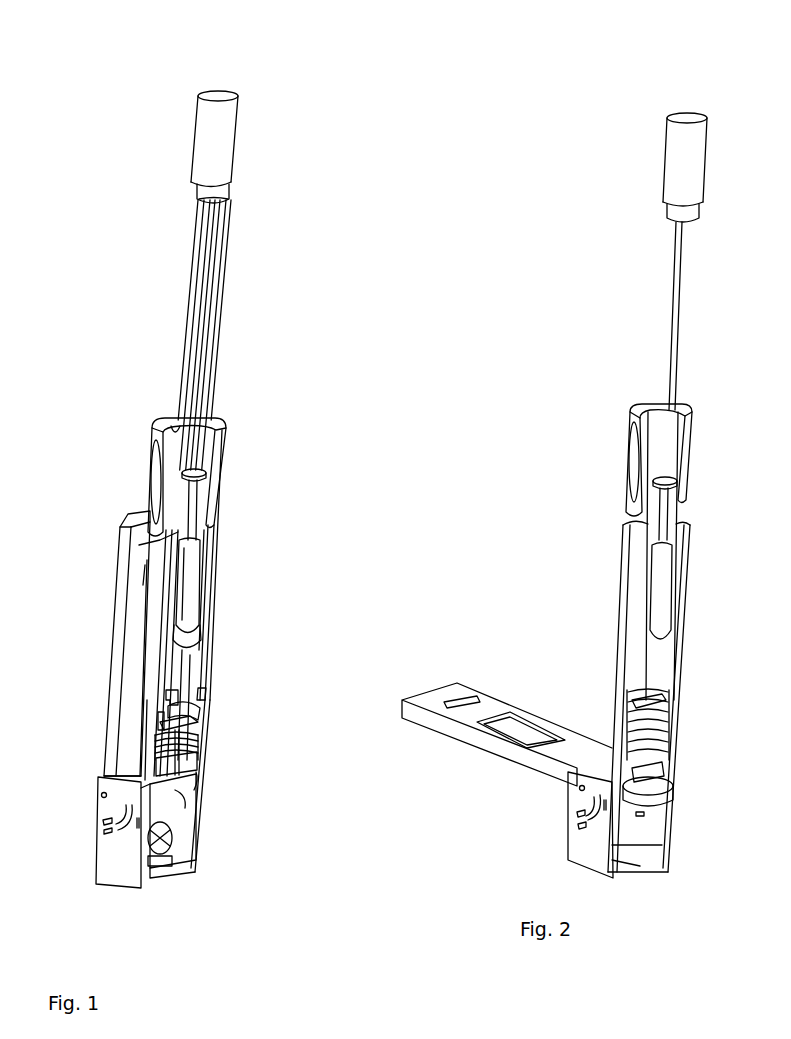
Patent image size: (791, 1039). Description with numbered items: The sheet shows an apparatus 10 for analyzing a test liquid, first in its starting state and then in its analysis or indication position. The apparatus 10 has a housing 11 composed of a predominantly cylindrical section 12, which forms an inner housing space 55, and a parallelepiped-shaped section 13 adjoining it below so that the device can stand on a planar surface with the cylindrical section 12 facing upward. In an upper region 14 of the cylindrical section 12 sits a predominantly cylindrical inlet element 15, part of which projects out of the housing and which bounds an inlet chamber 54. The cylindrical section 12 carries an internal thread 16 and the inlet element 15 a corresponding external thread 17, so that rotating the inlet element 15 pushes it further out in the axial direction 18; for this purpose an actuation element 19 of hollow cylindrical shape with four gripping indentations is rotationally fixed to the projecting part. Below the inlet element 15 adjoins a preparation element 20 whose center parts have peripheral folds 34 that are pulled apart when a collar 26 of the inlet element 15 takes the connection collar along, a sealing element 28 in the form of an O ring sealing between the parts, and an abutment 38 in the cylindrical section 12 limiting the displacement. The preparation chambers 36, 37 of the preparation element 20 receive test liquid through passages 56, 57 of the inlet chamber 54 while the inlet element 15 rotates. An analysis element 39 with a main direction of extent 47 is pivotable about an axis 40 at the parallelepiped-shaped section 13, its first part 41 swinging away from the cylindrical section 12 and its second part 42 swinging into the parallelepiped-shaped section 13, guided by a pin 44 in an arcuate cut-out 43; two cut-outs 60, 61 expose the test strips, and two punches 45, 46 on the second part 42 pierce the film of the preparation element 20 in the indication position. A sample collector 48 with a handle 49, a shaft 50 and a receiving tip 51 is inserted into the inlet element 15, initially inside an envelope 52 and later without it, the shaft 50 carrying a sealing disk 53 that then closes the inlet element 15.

In FIG. 1, the apparatus 10 is at (360, 219).
In FIG. 1, the housing 11 is at (222, 621).
In FIG. 1, the cylindrical section 12 is at (215, 581).
In FIG. 1, the parallelepiped-shaped section 13 is at (200, 853).
In FIG. 1, the upper region 14 is at (165, 658).
In FIG. 1, the inlet element 15 is at (206, 590).
In FIG. 2, the inlet element 15 is at (690, 514).
In FIG. 1, the internal thread 16 is at (203, 636).
In FIG. 1, the external thread 17 is at (158, 652).
In FIG. 1, the axial direction 18 is at (221, 75).
In FIG. 2, the axial direction 18 is at (693, 44).
In FIG. 1, the actuation element 19 is at (152, 426).
In FIG. 2, the actuation element 19 is at (640, 428).
In FIG. 1, the preparation element 20 is at (190, 755).
In FIG. 1, the collar 26 is at (182, 737).
In FIG. 1, the sealing element 28 is at (160, 728).
In FIG. 1, the peripheral fold 34 is at (198, 768).
In FIG. 1, the preparation chamber 36 is at (200, 746).
In FIG. 1, the preparation chamber 37 is at (104, 766).
In FIG. 1, the abutment 38 is at (206, 694).
In FIG. 1, the analysis element 39 is at (94, 748).
In FIG. 2, the analysis element 39 is at (470, 746).
In FIG. 1, the axis 40 is at (101, 799).
In FIG. 1, the first part 41 is at (116, 582).
In FIG. 1, the second part 42 is at (162, 798).
In FIG. 1, the arcuate cut-out 43 is at (123, 830).
In FIG. 1, the pin 44 is at (106, 828).
In FIG. 1, the punch 45 is at (166, 863).
In FIG. 2, the punch 45 is at (664, 768).
In FIG. 1, the punch 46 is at (156, 870).
In FIG. 2, the punch 46 is at (670, 782).
In FIG. 1, the main direction of extent 47 is at (128, 452).
In FIG. 2, the main direction of extent 47 is at (405, 712).
In FIG. 1, the sample collector 48 is at (244, 197).
In FIG. 1, the handle 49 is at (242, 122).
In FIG. 1, the shaft 50 is at (218, 268).
In FIG. 1, the receiving tip 51 is at (193, 546).
In FIG. 1, the envelope 52 is at (215, 366).
In FIG. 1, the sealing disk 53 is at (205, 474).
In FIG. 2, the sealing disk 53 is at (678, 481).
In FIG. 1, the inlet chamber 54 is at (182, 663).
In FIG. 1, the inner housing space 55 is at (205, 563).
In FIG. 1, the passage 56 is at (176, 700).
In FIG. 2, the passage 57 is at (646, 690).
In FIG. 2, the cut-out 60 is at (495, 722).
In FIG. 2, the cut-out 61 is at (530, 728).